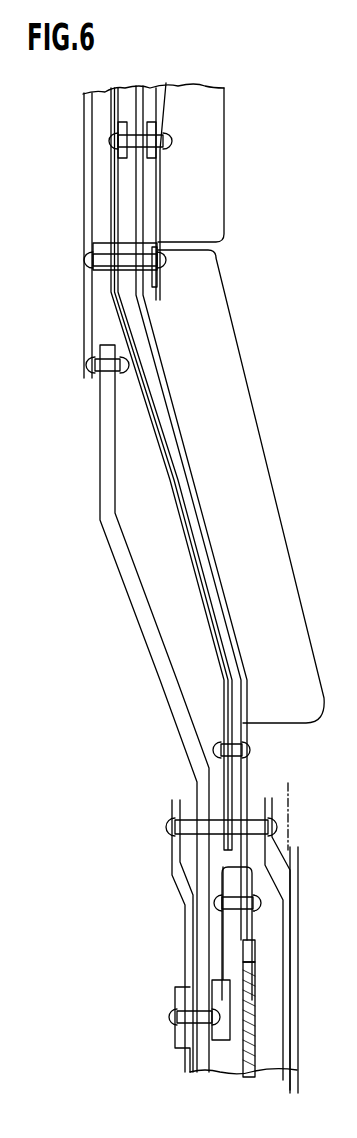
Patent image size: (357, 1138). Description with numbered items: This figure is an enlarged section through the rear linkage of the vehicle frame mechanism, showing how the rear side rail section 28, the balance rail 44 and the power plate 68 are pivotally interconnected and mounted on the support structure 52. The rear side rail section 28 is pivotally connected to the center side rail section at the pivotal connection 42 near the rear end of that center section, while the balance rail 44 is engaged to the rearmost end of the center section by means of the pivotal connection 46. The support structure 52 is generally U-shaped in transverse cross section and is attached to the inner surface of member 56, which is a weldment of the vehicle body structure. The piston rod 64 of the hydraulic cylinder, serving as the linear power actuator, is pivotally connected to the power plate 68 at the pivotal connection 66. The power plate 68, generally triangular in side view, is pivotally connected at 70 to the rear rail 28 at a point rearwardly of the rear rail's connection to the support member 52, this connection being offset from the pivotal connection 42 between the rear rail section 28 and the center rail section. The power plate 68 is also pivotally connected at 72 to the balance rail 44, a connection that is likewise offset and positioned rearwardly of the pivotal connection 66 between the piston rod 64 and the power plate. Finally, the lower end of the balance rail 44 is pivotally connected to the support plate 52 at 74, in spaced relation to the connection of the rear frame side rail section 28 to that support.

The rear side rail section 28 is at (203, 466).
The pivotal connection 42 is at (85, 266).
The balance rail 44 is at (137, 586).
The pivotal connection 46 is at (88, 369).
The support structure 52 is at (172, 860).
The member 56 is at (298, 1068).
The piston rod 64 is at (246, 1074).
The pivotal connection 66 is at (258, 900).
The power plate 68 is at (235, 892).
The pivotal connection 70 is at (250, 752).
The pivotal connection 72 is at (250, 950).
The pivotal connection 74 is at (172, 1017).